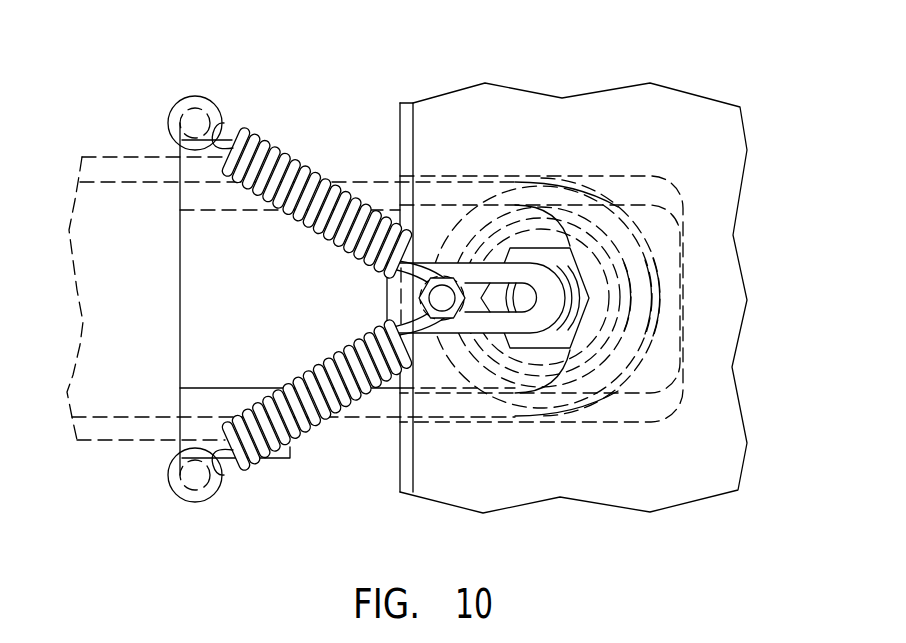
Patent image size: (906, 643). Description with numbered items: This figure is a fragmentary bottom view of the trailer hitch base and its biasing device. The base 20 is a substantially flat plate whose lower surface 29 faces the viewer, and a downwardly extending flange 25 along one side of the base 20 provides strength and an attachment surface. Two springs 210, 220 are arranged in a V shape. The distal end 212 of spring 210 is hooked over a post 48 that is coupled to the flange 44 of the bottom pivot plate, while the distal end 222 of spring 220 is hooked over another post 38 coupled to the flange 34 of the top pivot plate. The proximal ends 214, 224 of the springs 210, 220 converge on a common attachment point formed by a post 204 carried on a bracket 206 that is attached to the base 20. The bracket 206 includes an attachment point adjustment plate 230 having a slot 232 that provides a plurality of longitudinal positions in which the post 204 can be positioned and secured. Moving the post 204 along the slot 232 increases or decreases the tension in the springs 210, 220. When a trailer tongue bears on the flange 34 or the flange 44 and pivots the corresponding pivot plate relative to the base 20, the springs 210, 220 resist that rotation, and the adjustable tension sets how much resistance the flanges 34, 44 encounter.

The base 20 is at (690, 108).
The downwardly extending flanges 25 is at (398, 118).
The lower surface 29 is at (651, 146).
The flange 34 is at (282, 148).
The post 38 is at (195, 123).
The flange 44 is at (280, 460).
The post 48 is at (195, 475).
The post 204 is at (463, 283).
The bracket 206 is at (385, 298).
The spring 210 is at (357, 377).
The distal end 212 is at (198, 502).
The proximal end 214 is at (425, 323).
The spring 220 is at (250, 127).
The distal end 222 is at (193, 96).
The proximal end 224 is at (420, 275).
The attachment point adjustment plate 230 is at (547, 297).
The slot 232 is at (478, 285).